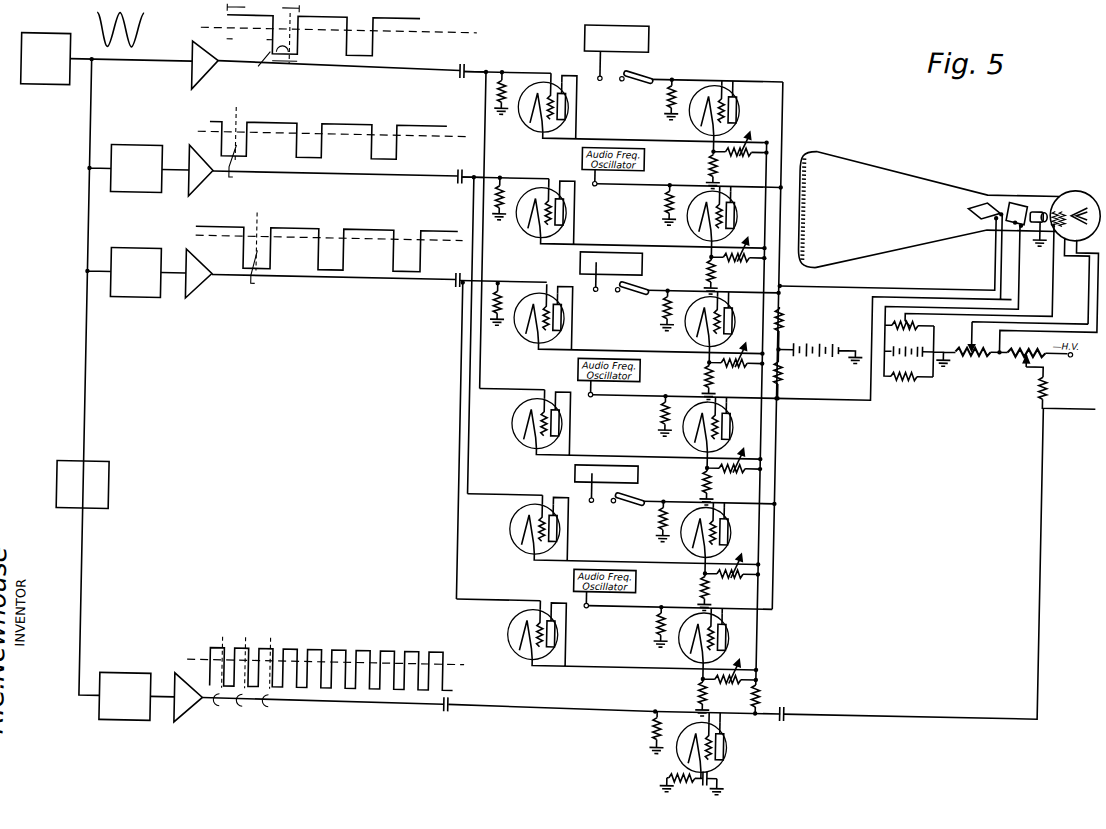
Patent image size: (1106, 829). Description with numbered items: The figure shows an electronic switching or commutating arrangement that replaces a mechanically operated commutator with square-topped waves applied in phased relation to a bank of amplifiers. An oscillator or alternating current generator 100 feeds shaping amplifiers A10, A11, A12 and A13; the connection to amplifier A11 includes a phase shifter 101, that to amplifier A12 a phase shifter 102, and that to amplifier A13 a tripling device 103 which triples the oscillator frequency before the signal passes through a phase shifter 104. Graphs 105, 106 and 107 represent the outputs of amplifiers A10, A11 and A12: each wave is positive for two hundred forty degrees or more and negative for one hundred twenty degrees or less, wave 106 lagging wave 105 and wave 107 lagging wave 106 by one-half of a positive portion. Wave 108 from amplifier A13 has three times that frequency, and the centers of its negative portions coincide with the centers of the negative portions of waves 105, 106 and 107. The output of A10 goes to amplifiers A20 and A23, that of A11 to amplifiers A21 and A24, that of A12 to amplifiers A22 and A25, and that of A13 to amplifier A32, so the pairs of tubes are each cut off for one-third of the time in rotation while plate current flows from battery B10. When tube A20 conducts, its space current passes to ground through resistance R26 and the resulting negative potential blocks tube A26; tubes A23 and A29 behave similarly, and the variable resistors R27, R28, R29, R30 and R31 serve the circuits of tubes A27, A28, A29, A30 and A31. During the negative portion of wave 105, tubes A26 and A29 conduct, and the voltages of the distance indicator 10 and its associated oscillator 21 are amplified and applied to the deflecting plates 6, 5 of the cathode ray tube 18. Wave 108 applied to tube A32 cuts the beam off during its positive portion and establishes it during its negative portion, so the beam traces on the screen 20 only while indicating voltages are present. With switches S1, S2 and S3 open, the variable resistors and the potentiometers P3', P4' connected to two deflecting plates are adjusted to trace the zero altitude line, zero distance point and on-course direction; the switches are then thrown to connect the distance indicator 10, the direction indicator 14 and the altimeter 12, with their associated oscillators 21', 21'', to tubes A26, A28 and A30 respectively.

The oscillator or alternating current generator 100 is at (44, 42).
The phase shifter 101 is at (136, 152).
The phase shifter 102 is at (138, 255).
The tripling device 103 is at (99, 469).
The phase shifter 104 is at (130, 680).
The wave 105 is at (330, 21).
The wave 106 is at (263, 127).
The wave 107 is at (283, 232).
The wave 108 is at (320, 655).
The shaping amplifier A10 is at (190, 80).
The shaping amplifier A11 is at (189, 198).
The shaping amplifier A12 is at (189, 302).
The shaping amplifier A13 is at (189, 729).
The amplifier A20 is at (529, 113).
The amplifier A21 is at (526, 219).
The amplifier A22 is at (524, 324).
The amplifier A23 is at (522, 430).
The amplifier A24 is at (520, 535).
The amplifier A25 is at (548, 635).
The tube A26 is at (730, 111).
The tube A27 is at (728, 217).
The tube A28 is at (726, 322).
The tube A29 is at (723, 428).
The tube A30 is at (721, 533).
The output tube A31 is at (719, 638).
The amplifier A32 is at (738, 737).
The resistance R26 is at (741, 158).
The variable resistor R27 is at (739, 263).
The variable cathode resistor R28 is at (737, 369).
The variable cathode resistor R29 is at (734, 474).
The variable cathode resistor R30 is at (732, 580).
The variable cathode resistor R31 is at (730, 685).
The switch S1 is at (625, 80).
The switch S2 is at (621, 291).
The switch S3 is at (617, 502).
The distance indicator 10 is at (627, 39).
The direction indicator 14 is at (623, 264).
The altimeter 12 is at (618, 474).
The audio frequency oscillator 21' is at (626, 159).
The oscillator 21 is at (620, 370).
The audio frequency oscillator 21'' is at (620, 581).
The cathode ray tube 18 is at (875, 158).
The fluorescent screen 20 is at (801, 198).
The deflecting plate 6 is at (982, 193).
The deflecting plate 5 is at (1020, 193).
The battery B10 is at (820, 342).
The potentiometer P3' is at (923, 339).
The potentiometer P4' is at (922, 389).